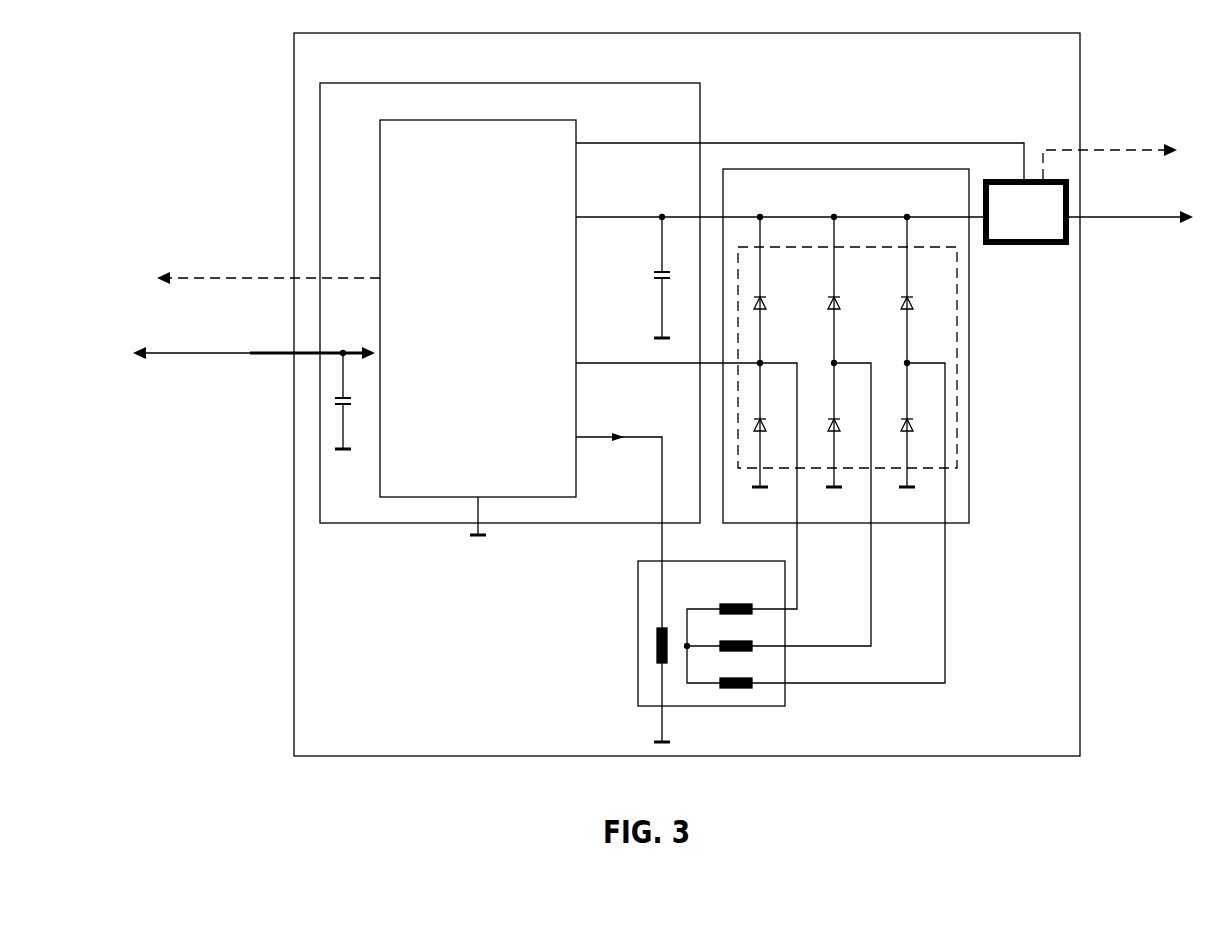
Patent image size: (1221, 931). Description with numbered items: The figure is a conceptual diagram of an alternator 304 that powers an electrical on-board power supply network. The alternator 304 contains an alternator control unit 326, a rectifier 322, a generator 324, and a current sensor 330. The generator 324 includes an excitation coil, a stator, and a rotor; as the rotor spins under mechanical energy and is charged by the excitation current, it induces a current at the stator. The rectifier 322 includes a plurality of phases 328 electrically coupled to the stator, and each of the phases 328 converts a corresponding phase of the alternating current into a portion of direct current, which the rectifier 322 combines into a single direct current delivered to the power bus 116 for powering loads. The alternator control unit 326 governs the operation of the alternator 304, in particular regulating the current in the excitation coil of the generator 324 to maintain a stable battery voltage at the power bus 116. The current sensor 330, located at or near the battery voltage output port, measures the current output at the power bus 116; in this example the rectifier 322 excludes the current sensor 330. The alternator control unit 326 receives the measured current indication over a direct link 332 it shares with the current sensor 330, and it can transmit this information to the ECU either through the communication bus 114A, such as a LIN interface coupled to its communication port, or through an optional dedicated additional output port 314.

The alternator 304 is at (687, 394).
The alternator control unit 326 is at (651, 412).
The rectifier 322 is at (846, 346).
The generator 324 is at (711, 633).
The current sensor 330 is at (1026, 212).
The plurality of phases 328 is at (957, 373).
The direct link 332 is at (823, 143).
The additional output port 314 is at (220, 278).
The communication bus 114A is at (1107, 150).
The power bus 116 is at (1118, 218).